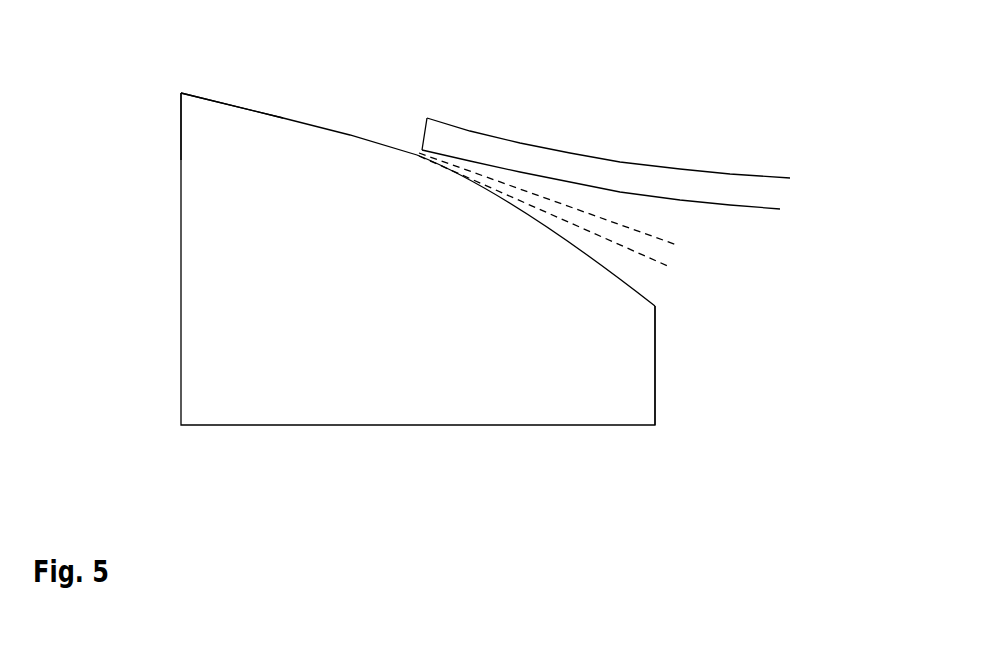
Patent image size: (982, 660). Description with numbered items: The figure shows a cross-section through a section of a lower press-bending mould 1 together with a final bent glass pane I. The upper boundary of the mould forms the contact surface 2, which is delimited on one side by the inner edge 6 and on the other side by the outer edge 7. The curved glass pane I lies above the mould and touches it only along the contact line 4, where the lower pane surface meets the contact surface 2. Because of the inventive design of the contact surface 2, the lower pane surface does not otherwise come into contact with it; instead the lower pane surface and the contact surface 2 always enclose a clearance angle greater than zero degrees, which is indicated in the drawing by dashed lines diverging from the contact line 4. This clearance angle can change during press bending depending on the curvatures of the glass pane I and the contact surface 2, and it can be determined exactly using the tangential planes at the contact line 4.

The lower press-bending mould 1 is at (283, 147).
The contact surface 2 is at (236, 99).
The contact line 4 is at (415, 158).
The inner edge 6 is at (660, 333).
The outer edge 7 is at (178, 88).
The glass pane I is at (492, 162).